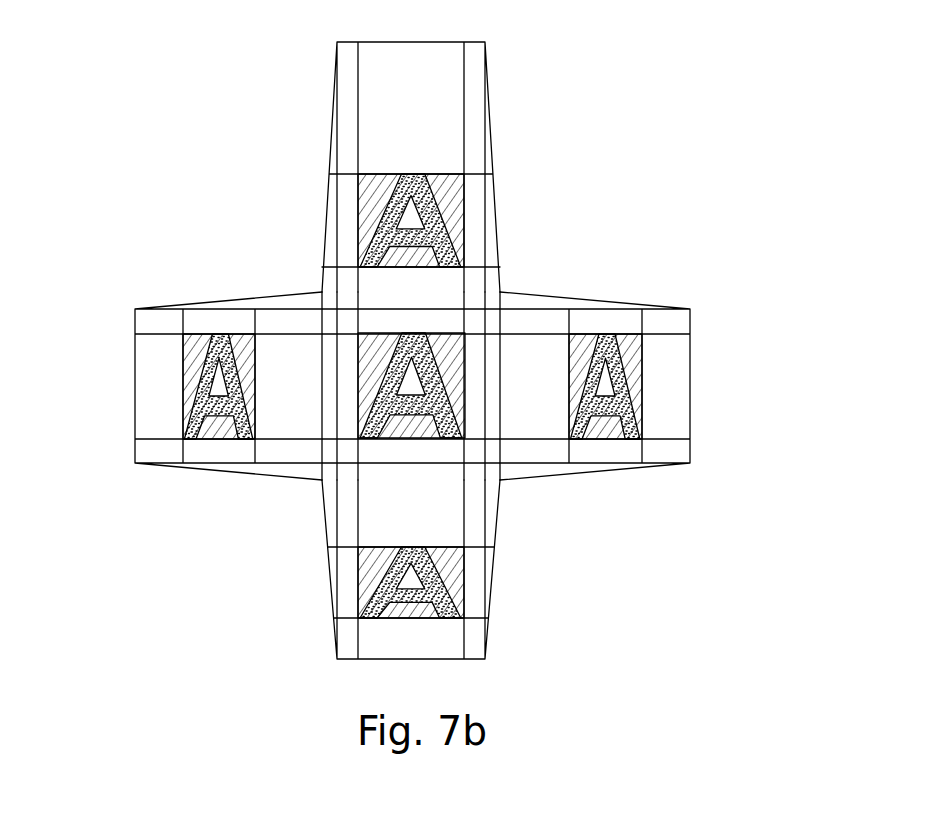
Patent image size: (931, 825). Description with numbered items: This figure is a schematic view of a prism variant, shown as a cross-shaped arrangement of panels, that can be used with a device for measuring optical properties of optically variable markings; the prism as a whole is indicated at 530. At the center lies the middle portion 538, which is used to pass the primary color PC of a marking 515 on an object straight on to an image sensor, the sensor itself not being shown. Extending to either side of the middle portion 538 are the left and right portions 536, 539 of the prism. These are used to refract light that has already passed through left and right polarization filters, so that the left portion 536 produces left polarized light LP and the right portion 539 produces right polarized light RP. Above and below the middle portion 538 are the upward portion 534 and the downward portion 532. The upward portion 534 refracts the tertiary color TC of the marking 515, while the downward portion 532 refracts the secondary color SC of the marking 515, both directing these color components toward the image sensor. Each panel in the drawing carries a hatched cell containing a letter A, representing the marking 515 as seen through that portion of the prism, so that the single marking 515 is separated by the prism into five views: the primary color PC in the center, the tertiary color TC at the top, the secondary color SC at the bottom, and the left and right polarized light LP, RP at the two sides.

The blank layout of label panels 530 is at (138, 300).
The upward portion 534 is at (350, 118).
The downward portion 532 is at (345, 598).
The left portion 536 is at (157, 376).
The right portion 539 is at (670, 370).
The middle portion 538 is at (472, 452).
The marking 515 is at (403, 337).
The tertiary color TC is at (447, 210).
The primary color PC is at (457, 373).
The left polarized light LP is at (225, 437).
The right polarized light RP is at (597, 425).
The secondary color SC is at (400, 617).